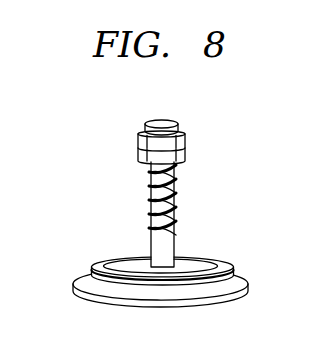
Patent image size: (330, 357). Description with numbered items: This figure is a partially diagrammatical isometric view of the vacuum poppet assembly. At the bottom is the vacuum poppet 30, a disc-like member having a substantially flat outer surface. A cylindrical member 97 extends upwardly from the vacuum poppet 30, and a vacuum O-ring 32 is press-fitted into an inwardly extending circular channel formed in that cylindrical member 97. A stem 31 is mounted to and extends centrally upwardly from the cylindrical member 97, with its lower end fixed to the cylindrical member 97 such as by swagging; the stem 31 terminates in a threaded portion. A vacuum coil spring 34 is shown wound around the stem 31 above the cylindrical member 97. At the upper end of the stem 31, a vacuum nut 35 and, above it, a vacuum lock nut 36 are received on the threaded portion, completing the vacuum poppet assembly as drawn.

The vacuum poppet 30 is at (242, 284).
The stem 31 is at (165, 253).
The vacuum O-ring 32 is at (228, 277).
The vacuum coil spring 34 is at (148, 175).
The vacuum nut 35 is at (185, 155).
The vacuum lock nut 36 is at (182, 137).
The cylindrical member 97 is at (121, 262).